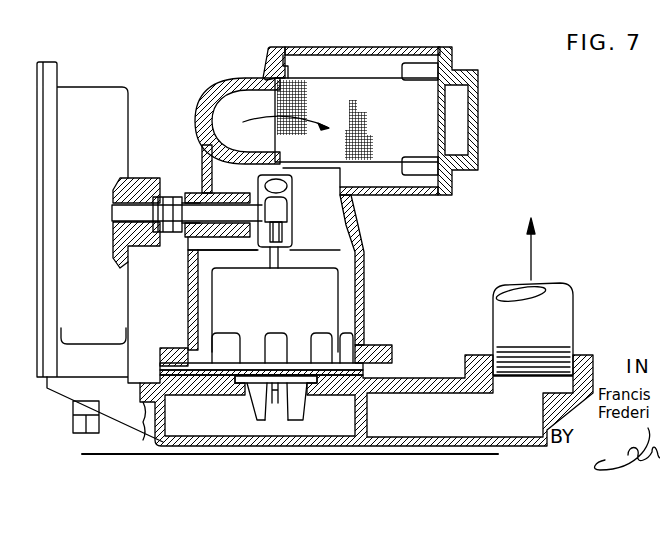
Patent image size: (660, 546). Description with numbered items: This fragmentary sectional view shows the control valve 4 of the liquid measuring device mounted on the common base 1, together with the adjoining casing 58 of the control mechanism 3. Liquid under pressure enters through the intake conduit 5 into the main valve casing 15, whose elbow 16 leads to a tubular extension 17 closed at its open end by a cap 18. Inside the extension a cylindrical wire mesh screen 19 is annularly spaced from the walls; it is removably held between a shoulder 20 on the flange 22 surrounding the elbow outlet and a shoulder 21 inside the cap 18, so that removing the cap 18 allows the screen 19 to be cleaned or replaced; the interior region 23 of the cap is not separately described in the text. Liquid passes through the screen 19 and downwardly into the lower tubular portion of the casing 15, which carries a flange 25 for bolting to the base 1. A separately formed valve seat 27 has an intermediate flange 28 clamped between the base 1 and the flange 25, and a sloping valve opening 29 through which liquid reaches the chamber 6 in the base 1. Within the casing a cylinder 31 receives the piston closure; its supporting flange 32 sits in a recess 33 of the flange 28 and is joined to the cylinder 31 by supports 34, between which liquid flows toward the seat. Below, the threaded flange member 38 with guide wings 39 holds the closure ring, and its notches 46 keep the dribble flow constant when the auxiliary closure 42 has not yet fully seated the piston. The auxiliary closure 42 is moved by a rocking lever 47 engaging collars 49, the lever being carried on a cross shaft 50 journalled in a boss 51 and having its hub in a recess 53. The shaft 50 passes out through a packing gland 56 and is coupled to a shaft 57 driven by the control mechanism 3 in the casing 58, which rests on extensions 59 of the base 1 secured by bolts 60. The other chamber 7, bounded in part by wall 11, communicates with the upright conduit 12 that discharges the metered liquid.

The base 1 is at (390, 452).
The control mechanism 3 is at (74, 155).
The control valve 4 is at (366, 278).
The intake conduit 5 is at (223, 103).
The chamber 6 is at (215, 429).
The chamber 7 is at (452, 427).
The wall 11 is at (368, 420).
The upright conduit 12 is at (574, 308).
The main valve casing 15 is at (363, 254).
The elbow 16 is at (227, 82).
The tubular extension 17 is at (377, 46).
The cap 18 is at (452, 56).
The wire mesh screen 19 is at (332, 86).
The shoulder 20 is at (255, 80).
The shoulder 21 is at (455, 87).
The flange 22 is at (280, 70).
The recess 23 is at (458, 133).
The flange 25 is at (395, 346).
The valve seat 27 is at (212, 384).
The intermediate flange 28 is at (392, 372).
The sloping valve opening 29 is at (256, 341).
The cylinder 31 is at (297, 306).
The supporting flange 32 is at (376, 344).
The recess 33 is at (181, 352).
The supports 34 is at (195, 338).
The flange member 38 is at (268, 392).
The guide wings 39 is at (250, 392).
The auxiliary closure 42 is at (283, 258).
The notches 46 is at (276, 398).
The rocking lever 47 is at (293, 239).
The collars 49 is at (268, 247).
The cross shaft 50 is at (228, 213).
The boss 51 is at (200, 241).
The recess 53 is at (315, 215).
The packing gland 56 is at (200, 185).
The shaft 57 is at (122, 212).
The casing 58 is at (77, 90).
The extensions 59 is at (75, 390).
The bolts 60 is at (78, 432).